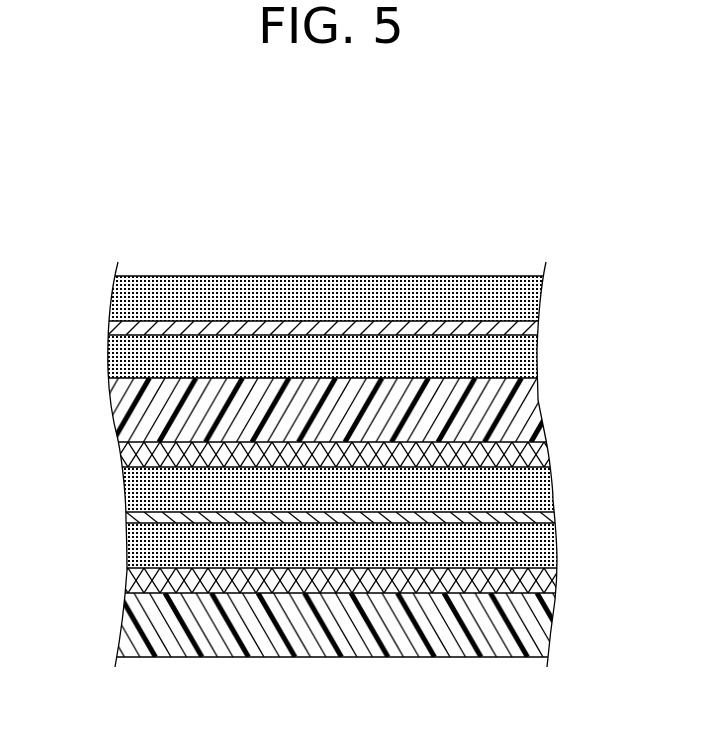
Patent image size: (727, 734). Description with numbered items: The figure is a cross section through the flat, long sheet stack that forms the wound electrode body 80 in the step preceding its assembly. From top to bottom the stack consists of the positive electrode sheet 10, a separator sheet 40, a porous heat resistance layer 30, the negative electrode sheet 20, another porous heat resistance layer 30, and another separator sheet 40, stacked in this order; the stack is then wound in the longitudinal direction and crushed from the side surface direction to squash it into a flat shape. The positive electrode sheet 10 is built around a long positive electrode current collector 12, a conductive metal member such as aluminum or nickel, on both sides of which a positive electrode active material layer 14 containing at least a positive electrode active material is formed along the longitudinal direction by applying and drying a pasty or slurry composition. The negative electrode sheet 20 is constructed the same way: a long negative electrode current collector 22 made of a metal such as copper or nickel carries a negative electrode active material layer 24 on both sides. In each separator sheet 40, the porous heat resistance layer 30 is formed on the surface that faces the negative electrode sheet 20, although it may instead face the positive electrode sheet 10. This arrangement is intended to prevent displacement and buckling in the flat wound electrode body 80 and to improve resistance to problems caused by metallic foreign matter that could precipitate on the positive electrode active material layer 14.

The wound electrode body 80 is at (571, 212).
The positive electrode sheet 10 is at (101, 278).
The positive electrode current collector 12 is at (535, 328).
The positive electrode active material layer 14 is at (535, 294).
The negative electrode sheet 20 is at (104, 468).
The negative electrode current collector 22 is at (553, 517).
The negative electrode active material layer 24 is at (543, 490).
The porous heat resistance layer 30 is at (113, 453).
The separator sheet 40 is at (117, 399).